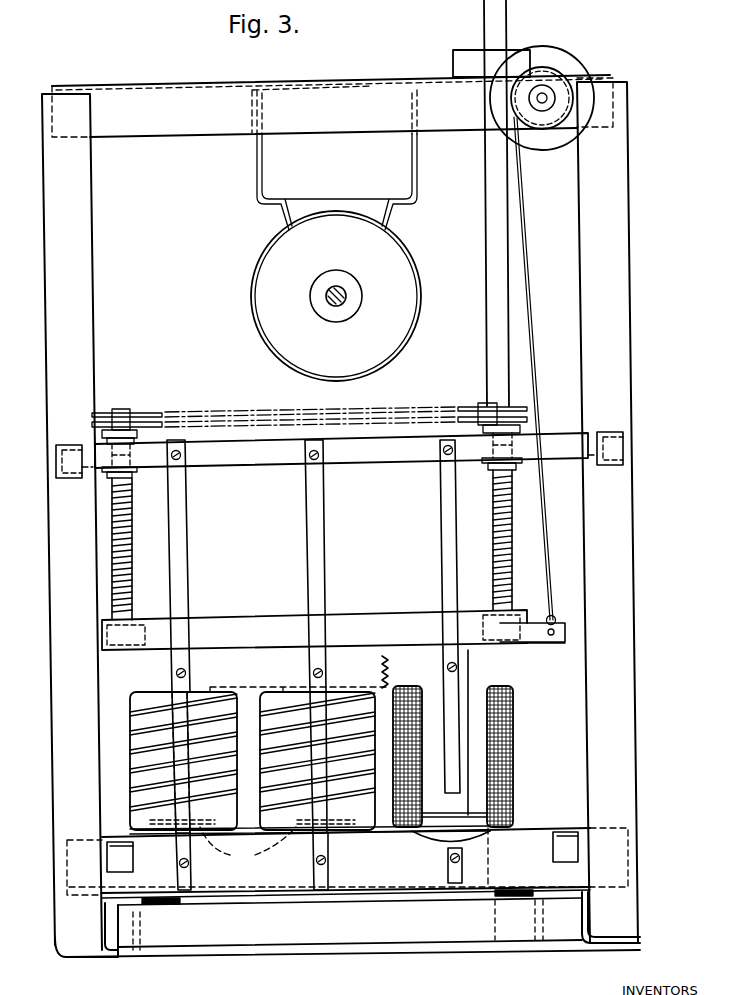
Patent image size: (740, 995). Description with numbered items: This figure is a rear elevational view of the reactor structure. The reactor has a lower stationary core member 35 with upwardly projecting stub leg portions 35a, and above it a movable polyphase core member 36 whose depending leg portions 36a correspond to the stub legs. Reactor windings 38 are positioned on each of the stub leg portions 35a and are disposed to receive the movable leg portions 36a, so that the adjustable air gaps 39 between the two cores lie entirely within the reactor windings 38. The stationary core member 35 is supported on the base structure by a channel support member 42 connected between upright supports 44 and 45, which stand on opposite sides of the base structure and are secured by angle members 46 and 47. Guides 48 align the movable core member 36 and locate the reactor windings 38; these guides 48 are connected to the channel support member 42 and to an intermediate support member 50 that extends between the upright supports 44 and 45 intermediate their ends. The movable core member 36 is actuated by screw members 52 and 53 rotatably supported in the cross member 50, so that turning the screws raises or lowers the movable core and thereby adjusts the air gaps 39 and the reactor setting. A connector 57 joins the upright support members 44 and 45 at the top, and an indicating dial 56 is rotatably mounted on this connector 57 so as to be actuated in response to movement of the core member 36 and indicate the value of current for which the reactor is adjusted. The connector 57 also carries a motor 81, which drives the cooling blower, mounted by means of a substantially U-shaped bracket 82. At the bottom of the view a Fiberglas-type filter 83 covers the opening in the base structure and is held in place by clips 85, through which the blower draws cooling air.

The lower stationary core member 35 is at (150, 834).
The stub leg portions 35a is at (452, 826).
The movable polyphase core member 36 is at (473, 665).
The depending leg portions 36a is at (476, 769).
The reactor windings 38 is at (130, 751).
The adjustable air gaps 39 is at (463, 818).
The channel support member 42 is at (67, 858).
The upright support 44 is at (634, 553).
The upright support 45 is at (50, 548).
The angle member 46 is at (605, 951).
The angle member 47 is at (94, 960).
The guides 48 is at (185, 531).
The intermediate support member 50 is at (87, 440).
The screw member 52 is at (487, 359).
The screw member 53 is at (123, 410).
The indicating dial 56 is at (578, 67).
The connector 57 is at (163, 139).
The motor 81 is at (262, 284).
The U-shaped bracket 82 is at (255, 180).
The filter 83 is at (288, 946).
The clip 85 is at (165, 906).